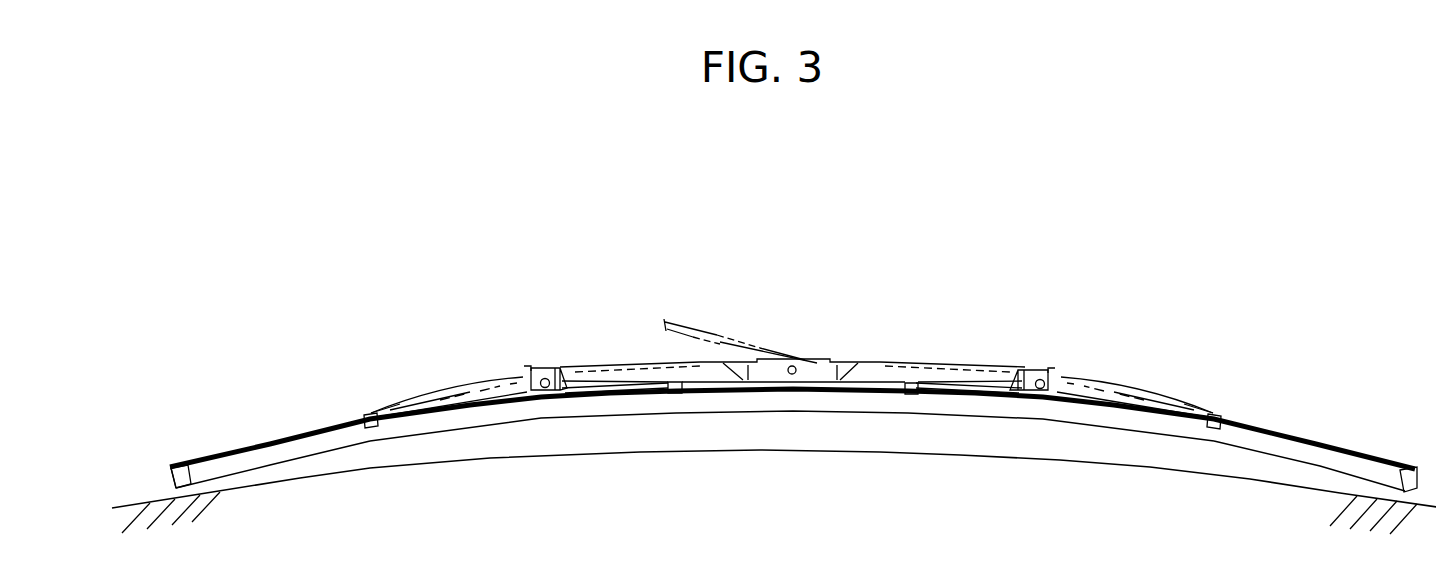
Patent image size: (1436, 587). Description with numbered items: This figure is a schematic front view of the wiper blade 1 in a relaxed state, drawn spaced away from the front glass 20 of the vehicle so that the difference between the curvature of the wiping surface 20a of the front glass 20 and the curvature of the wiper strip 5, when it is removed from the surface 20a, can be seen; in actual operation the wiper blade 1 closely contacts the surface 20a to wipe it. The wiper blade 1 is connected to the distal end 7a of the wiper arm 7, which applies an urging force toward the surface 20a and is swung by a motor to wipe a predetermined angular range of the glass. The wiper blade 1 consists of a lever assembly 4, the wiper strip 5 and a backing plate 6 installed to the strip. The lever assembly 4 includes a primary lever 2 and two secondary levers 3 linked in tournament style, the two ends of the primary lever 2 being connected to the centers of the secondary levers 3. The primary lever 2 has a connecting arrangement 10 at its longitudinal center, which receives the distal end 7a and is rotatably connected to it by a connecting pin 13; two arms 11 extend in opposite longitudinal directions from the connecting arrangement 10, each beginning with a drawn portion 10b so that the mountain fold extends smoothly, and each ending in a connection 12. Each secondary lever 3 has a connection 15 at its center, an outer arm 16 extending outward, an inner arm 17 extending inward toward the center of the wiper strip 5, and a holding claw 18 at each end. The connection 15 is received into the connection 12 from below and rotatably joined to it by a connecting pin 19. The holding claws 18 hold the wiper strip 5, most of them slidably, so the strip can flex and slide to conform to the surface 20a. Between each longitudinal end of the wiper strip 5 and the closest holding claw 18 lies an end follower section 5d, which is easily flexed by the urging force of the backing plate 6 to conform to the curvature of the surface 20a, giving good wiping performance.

The wiper blade 1 is at (1033, 287).
The primary lever 2 is at (637, 362).
The secondary lever 3 is at (440, 395).
The lever assembly 4 is at (915, 338).
The wiper strip 5 is at (732, 404).
The end follower section 5d is at (243, 466).
The backing plate 6 is at (257, 444).
The wiper arm 7 is at (690, 322).
The distal end of wiper arm 7a is at (803, 346).
The connecting arrangement 10 is at (772, 362).
The drawn portion 10b is at (741, 366).
The arm 11 is at (595, 362).
The connection 12 is at (542, 367).
The connecting pin 13 is at (792, 376).
The connection 15 is at (533, 364).
The outer arm 16 is at (398, 405).
The inner arm 17 is at (568, 390).
The holding claw 18 is at (372, 428).
The connecting pin 19 is at (542, 394).
The front glass 20 is at (190, 478).
The surface of front glass 20a is at (130, 503).